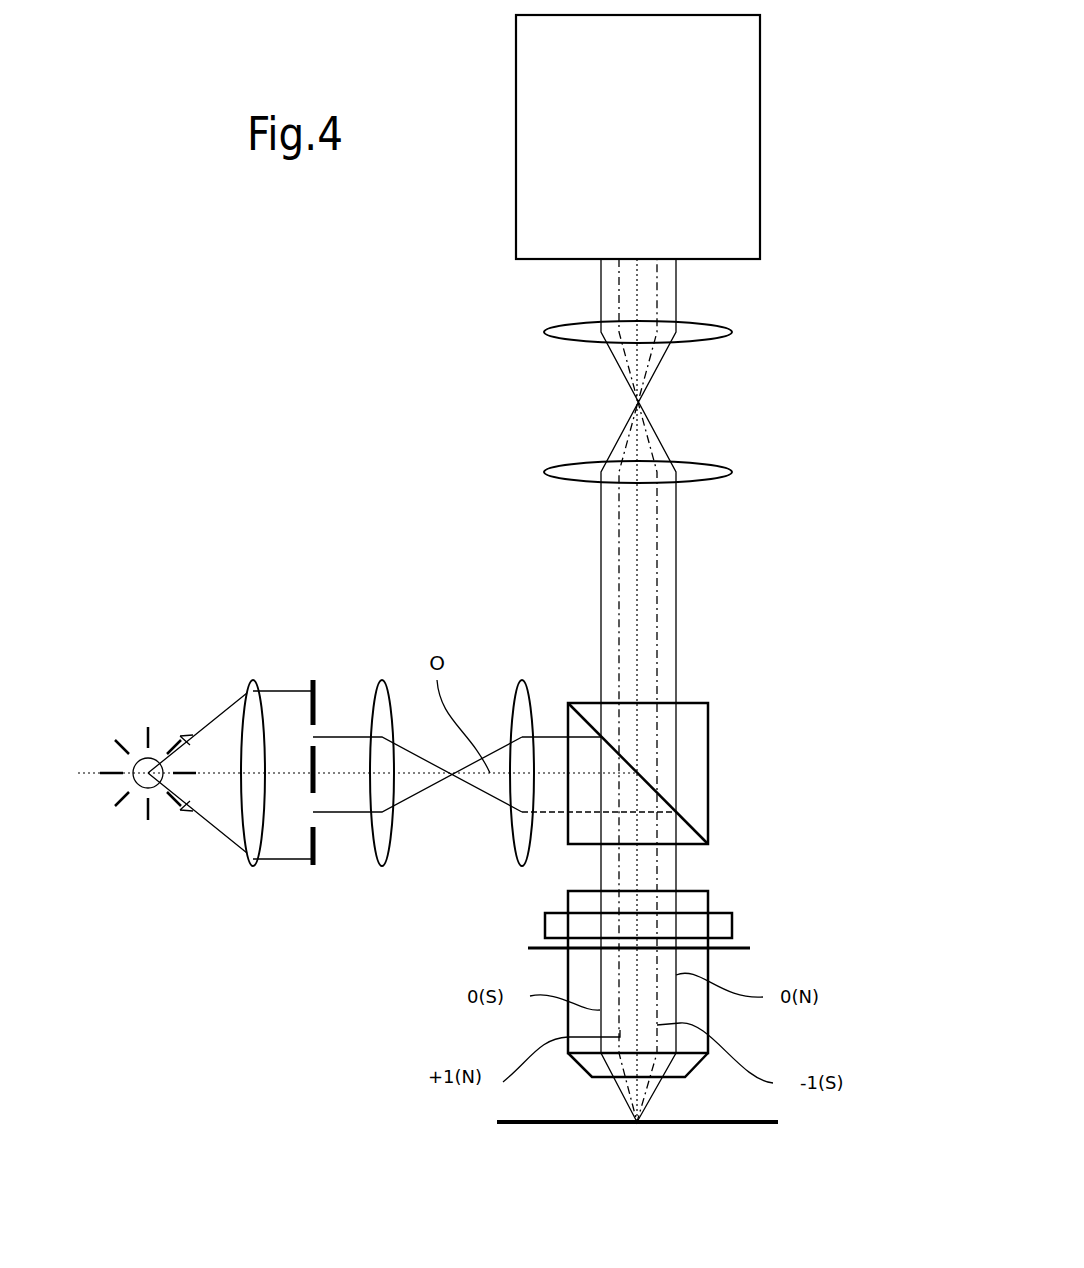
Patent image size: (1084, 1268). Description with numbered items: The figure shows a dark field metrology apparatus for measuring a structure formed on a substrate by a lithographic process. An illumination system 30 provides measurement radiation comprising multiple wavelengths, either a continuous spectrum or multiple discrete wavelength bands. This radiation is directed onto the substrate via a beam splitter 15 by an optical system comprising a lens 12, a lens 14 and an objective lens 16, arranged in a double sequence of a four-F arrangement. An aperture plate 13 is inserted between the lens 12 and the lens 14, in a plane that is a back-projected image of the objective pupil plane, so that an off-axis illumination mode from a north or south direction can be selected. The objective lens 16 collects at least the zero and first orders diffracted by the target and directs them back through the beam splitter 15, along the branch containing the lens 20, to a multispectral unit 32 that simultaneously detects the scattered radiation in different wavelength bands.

The lens 12 is at (255, 866).
The aperture plate 13 is at (313, 866).
The lens 14 is at (535, 875).
The beam splitter 15 is at (708, 783).
The objective lens 16 is at (708, 1007).
The lens 20 is at (737, 485).
The illumination system 30 is at (148, 795).
The multispectral unit 32 is at (626, 150).